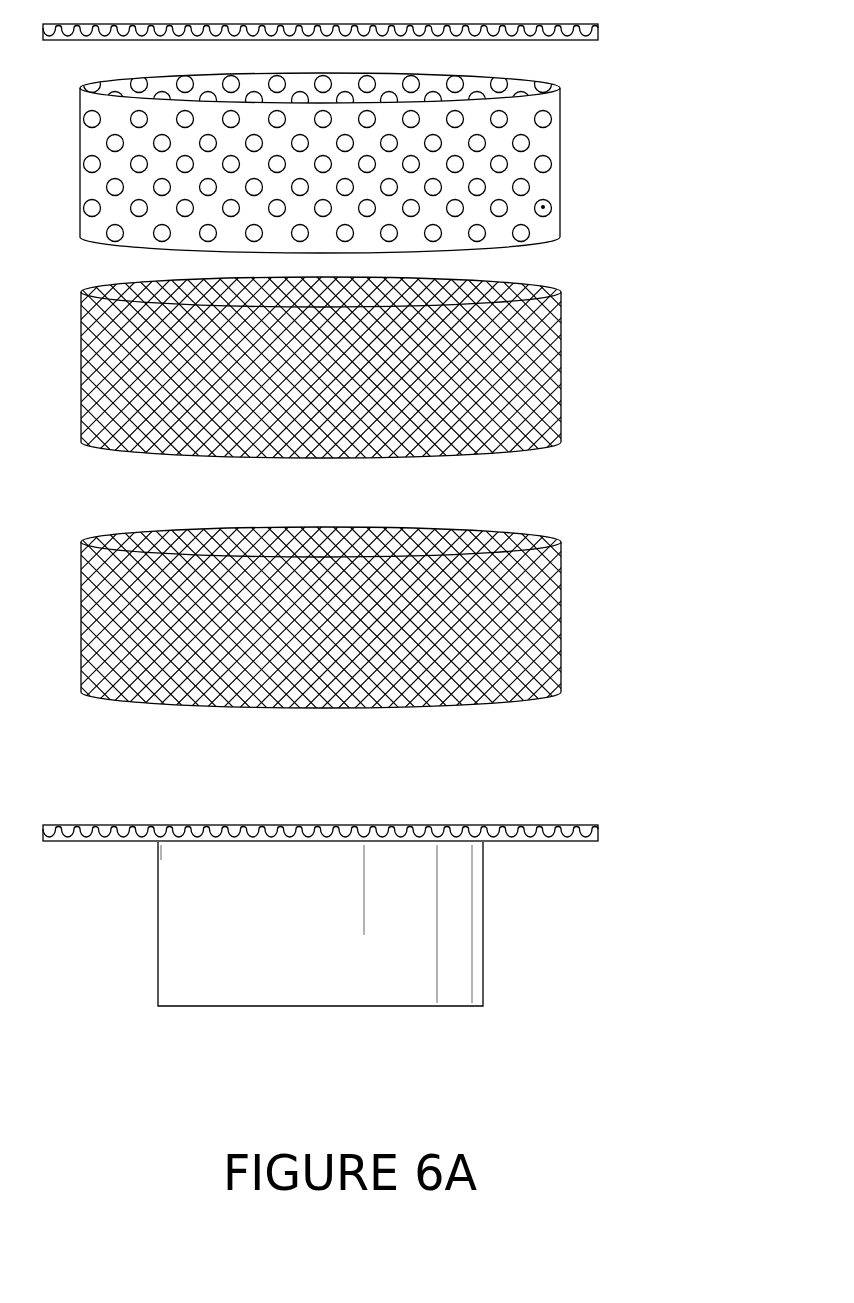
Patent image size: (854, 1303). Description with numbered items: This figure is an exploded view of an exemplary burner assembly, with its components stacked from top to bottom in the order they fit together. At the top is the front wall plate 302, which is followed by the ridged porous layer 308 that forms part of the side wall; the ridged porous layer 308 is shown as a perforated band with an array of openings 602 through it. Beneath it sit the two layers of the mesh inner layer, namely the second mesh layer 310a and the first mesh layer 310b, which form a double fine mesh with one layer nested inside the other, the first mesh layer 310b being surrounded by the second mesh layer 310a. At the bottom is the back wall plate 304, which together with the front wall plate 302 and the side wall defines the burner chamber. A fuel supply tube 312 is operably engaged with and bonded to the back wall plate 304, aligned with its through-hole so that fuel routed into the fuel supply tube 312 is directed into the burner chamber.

The front wall plate 302 is at (598, 38).
The ridged porous layer 308 is at (543, 138).
The perforation hole 602 is at (543, 207).
The second mesh layer 310a is at (533, 345).
The first mesh layer 310b is at (537, 600).
The back wall plate 304 is at (600, 828).
The fuel supply tube 312 is at (453, 985).